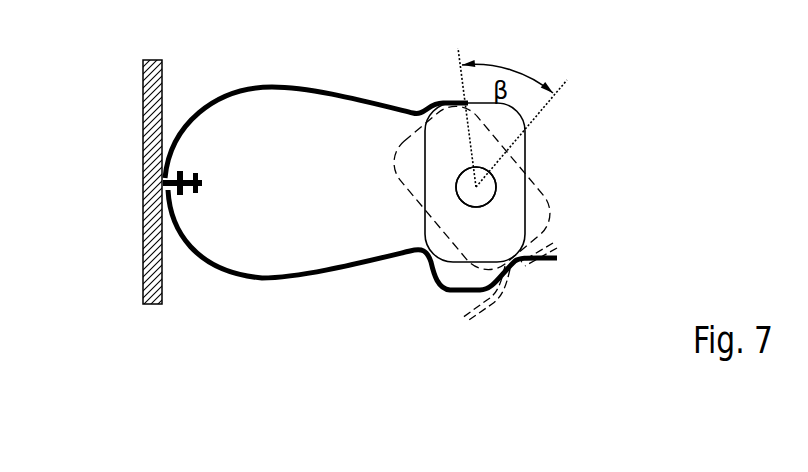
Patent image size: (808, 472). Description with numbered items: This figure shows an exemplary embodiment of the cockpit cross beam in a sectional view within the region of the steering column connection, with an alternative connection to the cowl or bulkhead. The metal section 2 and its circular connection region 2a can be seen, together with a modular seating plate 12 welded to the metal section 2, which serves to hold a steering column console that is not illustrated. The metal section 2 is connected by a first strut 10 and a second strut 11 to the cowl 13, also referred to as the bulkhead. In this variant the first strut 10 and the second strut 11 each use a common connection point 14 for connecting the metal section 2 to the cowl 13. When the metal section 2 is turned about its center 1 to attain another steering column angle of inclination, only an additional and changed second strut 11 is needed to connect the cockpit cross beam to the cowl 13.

The pivot axis 1 is at (511, 127).
The metal section 2 is at (417, 172).
The circular connection region 2a is at (460, 200).
The first strut 10 is at (293, 88).
The second strut 11 is at (308, 275).
The modular seating plate 12 is at (527, 250).
The cowl 13 is at (142, 173).
The connection point 14 is at (202, 183).